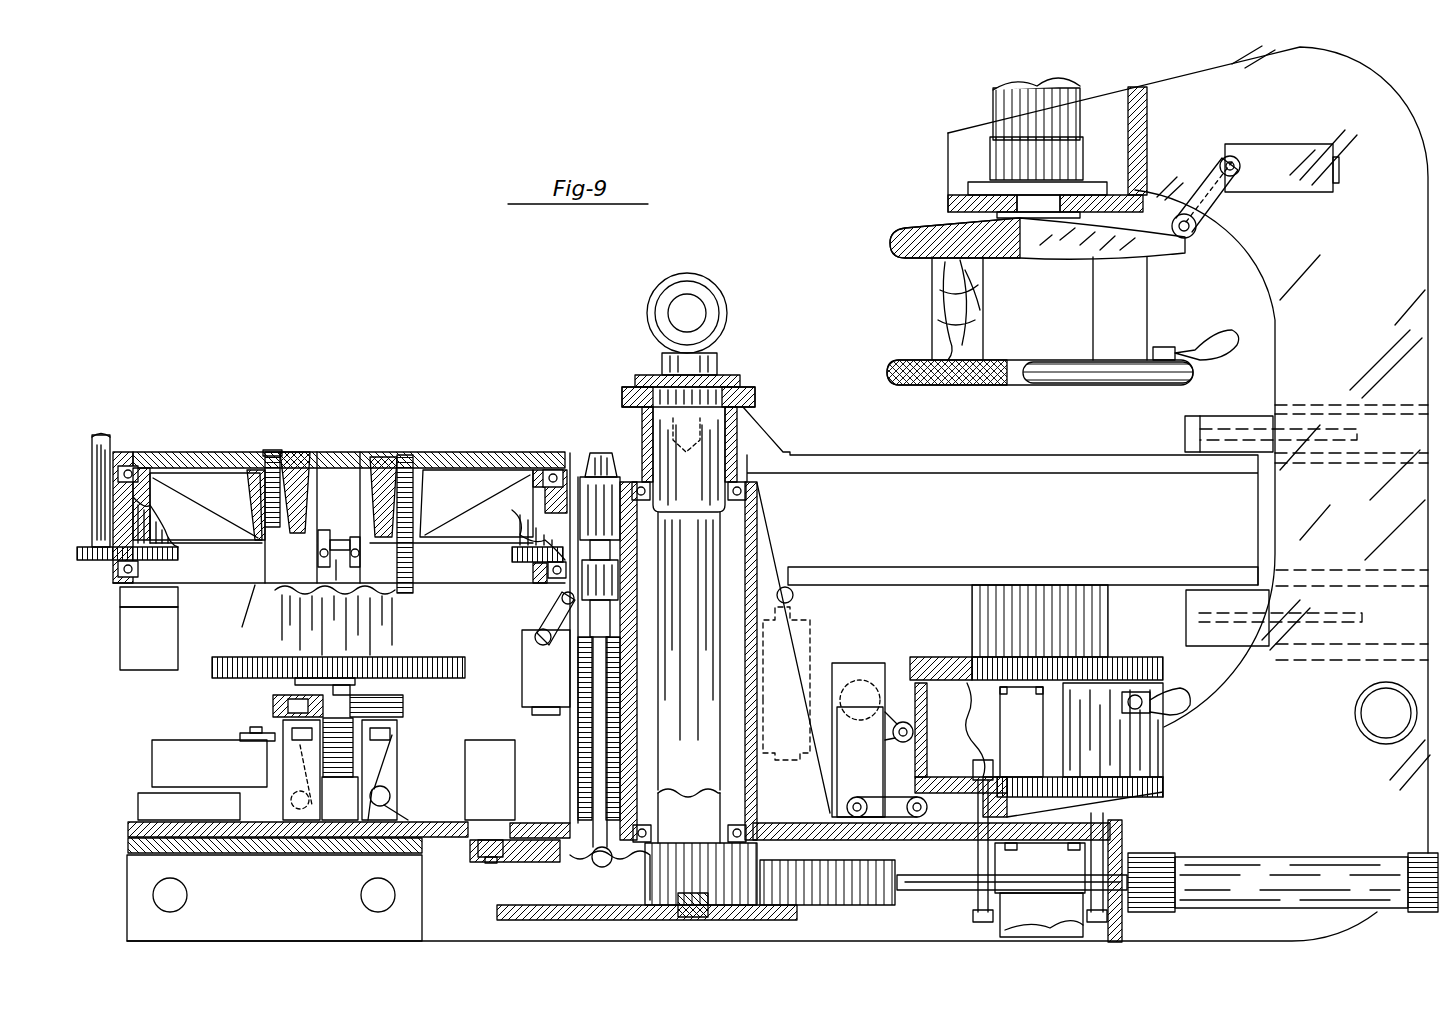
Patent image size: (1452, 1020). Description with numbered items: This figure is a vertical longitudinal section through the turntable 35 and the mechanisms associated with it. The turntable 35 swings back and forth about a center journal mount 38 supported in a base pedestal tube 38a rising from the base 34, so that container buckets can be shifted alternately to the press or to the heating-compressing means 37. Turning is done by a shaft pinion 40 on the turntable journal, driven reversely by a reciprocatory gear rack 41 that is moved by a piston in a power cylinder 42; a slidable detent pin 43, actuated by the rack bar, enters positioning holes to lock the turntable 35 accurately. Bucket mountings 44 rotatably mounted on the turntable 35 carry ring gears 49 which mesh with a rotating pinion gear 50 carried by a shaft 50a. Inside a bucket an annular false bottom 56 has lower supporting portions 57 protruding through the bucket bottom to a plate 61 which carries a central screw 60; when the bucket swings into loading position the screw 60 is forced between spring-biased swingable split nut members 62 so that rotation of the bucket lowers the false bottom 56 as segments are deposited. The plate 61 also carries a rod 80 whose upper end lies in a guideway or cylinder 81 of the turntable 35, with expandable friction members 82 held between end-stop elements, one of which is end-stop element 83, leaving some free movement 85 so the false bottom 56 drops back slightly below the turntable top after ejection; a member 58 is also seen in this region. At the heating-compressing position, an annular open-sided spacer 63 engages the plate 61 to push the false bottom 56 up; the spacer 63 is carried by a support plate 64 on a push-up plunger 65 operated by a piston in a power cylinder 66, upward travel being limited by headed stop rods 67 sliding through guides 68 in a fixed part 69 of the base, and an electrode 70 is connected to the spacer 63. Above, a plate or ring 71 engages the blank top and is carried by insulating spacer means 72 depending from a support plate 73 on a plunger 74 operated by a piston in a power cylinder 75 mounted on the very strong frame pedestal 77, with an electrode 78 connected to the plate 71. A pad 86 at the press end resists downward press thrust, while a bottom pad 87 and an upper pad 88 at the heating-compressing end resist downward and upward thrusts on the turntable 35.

The base 34 is at (258, 911).
The turntable 35 is at (498, 455).
The heating-compressing means 37 is at (925, 152).
The center journal mount 38 is at (676, 678).
The base pedestal tube 38a is at (757, 535).
The shaft pinion 40 is at (684, 840).
The reciprocatory gear rack 41 is at (858, 907).
The power cylinder 42 is at (1228, 891).
The slidable detent pin 43 is at (593, 457).
The bucket mountings 44 is at (142, 472).
The ring gear 49 is at (178, 553).
The pinion gear 50 is at (100, 560).
The shaft 50a is at (88, 447).
The annular false bottom 56 is at (265, 552).
The false bottom supporting means 57 is at (413, 630).
The plate 58 is at (520, 587).
The central screw 60 is at (353, 773).
The plate 61 is at (467, 673).
The spring-biased swingable split nut members 62 is at (273, 707).
The annular open-sided spacer 63 is at (1164, 739).
The support plate 64 is at (1162, 783).
The push-up plunger 65 is at (1140, 802).
The power cylinder 66 is at (1050, 923).
The headed stop rods 67 is at (973, 918).
The guides 68 is at (975, 838).
The fixed part of the base 69 is at (887, 842).
The electrode 70 is at (1188, 712).
The plate or ring 71 is at (1072, 385).
The insulating spacer means 72 is at (1147, 313).
The support plate 73 is at (1168, 257).
The plunger 74 is at (1033, 197).
The power cylinder 75 is at (1050, 112).
The frame pedestal 77 is at (1187, 75).
The electrode 78 is at (1230, 352).
The rod 80 is at (350, 573).
The guideway or cylinder 81 is at (407, 458).
The expandable friction members 82 is at (320, 560).
The end-stop element 83 is at (340, 535).
The free movement 85 is at (313, 593).
The pad 86 is at (167, 607).
The bottom pad 87 is at (1186, 618).
The upper pad 88 is at (1185, 424).